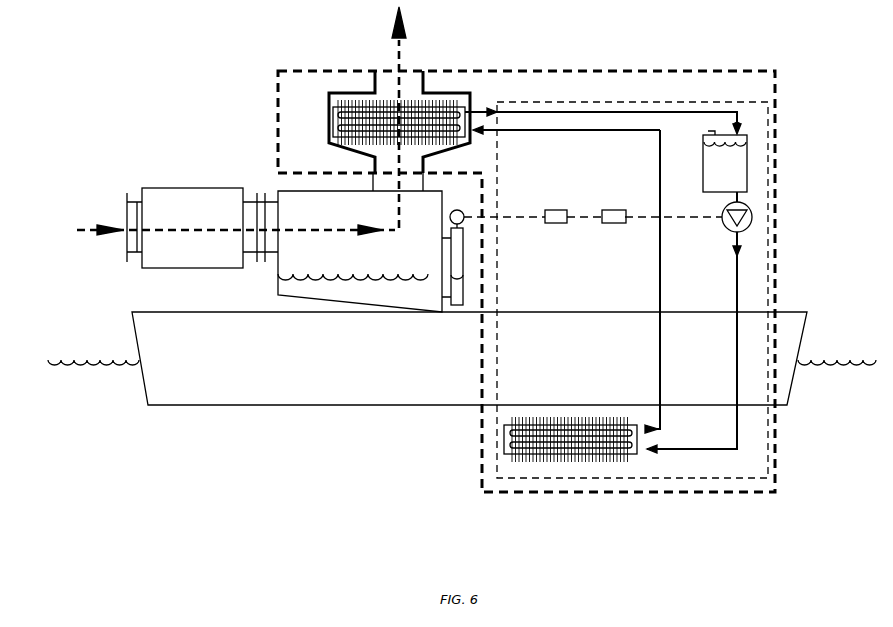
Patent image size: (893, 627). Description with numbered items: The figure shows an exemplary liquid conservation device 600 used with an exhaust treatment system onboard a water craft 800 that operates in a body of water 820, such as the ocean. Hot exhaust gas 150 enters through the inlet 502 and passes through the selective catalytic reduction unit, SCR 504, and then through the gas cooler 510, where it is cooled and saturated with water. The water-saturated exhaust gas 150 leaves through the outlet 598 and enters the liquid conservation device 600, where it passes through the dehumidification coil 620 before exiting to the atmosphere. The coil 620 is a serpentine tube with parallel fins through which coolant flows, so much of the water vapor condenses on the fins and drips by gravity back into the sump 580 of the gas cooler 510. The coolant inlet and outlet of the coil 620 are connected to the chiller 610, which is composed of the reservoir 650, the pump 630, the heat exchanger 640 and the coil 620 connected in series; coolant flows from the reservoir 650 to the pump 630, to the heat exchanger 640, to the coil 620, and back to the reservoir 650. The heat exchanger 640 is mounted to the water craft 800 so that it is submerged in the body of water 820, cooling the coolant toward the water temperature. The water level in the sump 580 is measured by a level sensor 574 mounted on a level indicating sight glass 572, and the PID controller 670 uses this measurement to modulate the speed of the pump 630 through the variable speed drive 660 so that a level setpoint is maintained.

The exhaust gas 150 is at (97, 228).
The inlet 502 is at (130, 255).
The selective catalytic reduction (SCR) 504 is at (188, 268).
The gas cooler 510 is at (280, 191).
The level indicating sight glass 572 is at (465, 267).
The level sensor 574 is at (462, 212).
The sump 580 is at (423, 287).
The outlet 598 is at (372, 181).
The liquid conservation device 600 is at (728, 68).
The chiller 610 is at (658, 101).
The dehumidification coil 620 is at (420, 100).
The pump 630 is at (724, 208).
The heat exchanger 640 is at (568, 418).
The reservoir 650 is at (705, 163).
The variable speed drive (VSD) 660 is at (610, 210).
The PID controller 670 is at (555, 224).
The water craft 800 is at (140, 360).
The body of water 820 is at (118, 408).